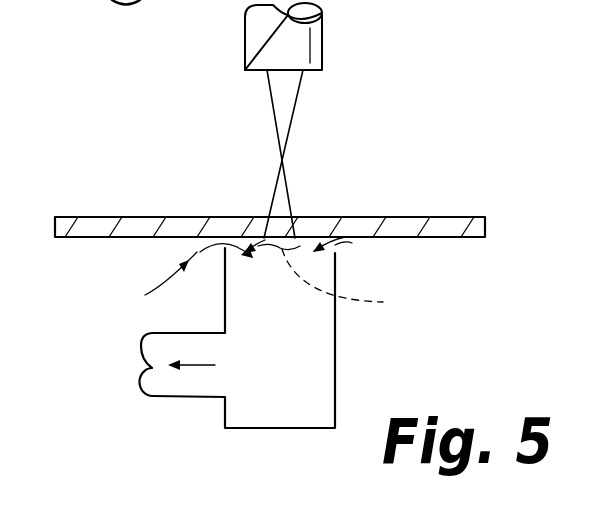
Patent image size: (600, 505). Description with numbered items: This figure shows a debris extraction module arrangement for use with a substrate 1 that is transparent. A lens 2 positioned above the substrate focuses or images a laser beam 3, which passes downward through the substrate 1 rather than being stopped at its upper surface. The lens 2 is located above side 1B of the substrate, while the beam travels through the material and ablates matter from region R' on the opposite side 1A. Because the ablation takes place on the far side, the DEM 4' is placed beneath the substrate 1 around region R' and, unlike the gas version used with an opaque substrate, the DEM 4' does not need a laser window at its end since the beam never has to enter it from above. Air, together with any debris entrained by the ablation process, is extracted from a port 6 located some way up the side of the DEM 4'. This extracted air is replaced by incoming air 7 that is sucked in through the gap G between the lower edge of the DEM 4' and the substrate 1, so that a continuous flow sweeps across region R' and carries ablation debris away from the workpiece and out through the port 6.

The substrate 1 is at (112, 237).
The side of the substrate 1A is at (452, 237).
The side of the substrate 1B is at (420, 217).
The lens 2 is at (322, 42).
The laser beam 3 is at (290, 97).
The DEM 4' is at (266, 338).
The port 6 is at (126, 372).
The incoming air 7 is at (348, 243).
The gap G is at (345, 237).
The region R' is at (347, 282).